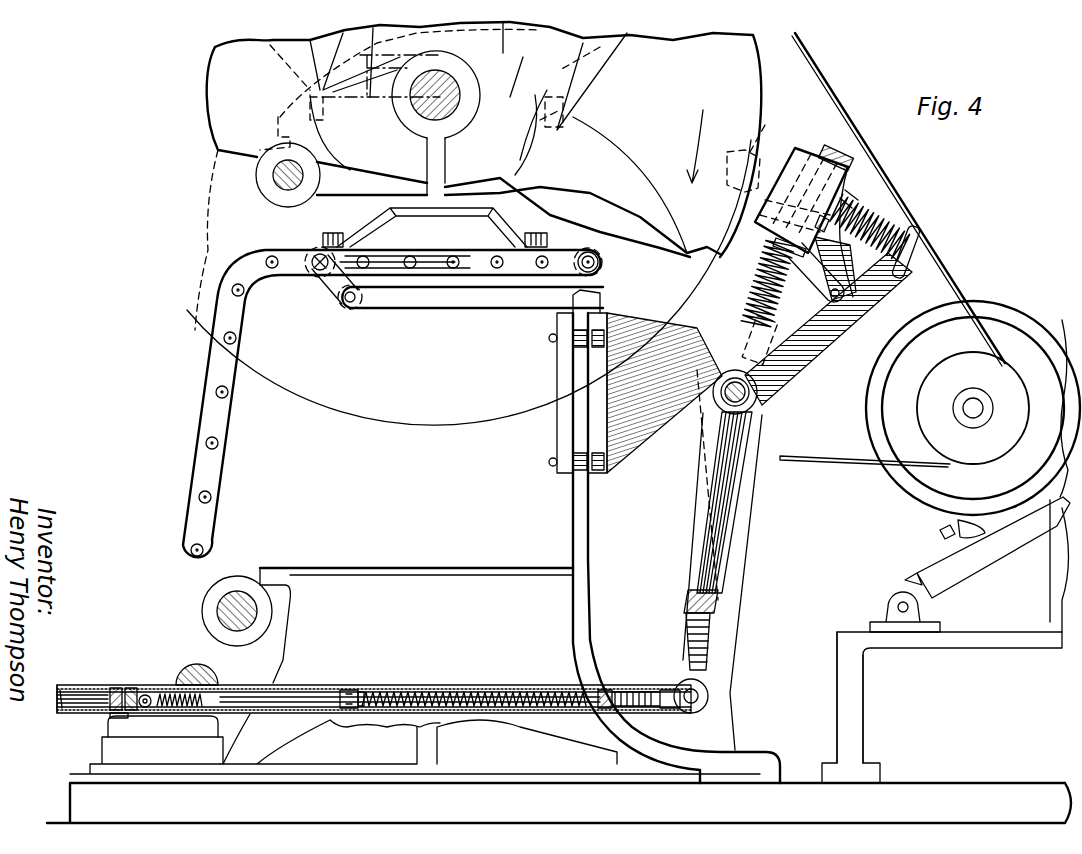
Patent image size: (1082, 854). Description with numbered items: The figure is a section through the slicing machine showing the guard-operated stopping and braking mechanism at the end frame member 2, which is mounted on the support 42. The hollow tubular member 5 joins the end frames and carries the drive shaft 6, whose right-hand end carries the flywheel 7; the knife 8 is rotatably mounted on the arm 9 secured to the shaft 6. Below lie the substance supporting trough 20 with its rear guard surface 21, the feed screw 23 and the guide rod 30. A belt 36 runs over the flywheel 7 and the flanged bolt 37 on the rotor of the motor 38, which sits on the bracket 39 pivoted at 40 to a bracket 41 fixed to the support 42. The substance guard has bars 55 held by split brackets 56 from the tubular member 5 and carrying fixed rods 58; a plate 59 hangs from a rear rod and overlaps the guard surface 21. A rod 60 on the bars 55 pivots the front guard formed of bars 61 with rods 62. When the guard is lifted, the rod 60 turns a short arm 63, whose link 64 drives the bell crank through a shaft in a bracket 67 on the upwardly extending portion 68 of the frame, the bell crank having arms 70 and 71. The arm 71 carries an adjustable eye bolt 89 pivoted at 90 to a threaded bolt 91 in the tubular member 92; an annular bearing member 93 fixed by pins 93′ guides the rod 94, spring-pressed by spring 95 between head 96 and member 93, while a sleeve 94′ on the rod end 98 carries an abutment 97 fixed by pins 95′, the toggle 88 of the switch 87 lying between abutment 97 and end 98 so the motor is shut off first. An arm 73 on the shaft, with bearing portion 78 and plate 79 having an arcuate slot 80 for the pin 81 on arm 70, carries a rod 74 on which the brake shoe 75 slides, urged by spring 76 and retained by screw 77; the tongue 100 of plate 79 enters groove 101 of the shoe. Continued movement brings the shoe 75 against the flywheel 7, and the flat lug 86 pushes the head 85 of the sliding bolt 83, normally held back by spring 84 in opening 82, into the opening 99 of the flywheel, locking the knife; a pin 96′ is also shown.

The end frame member 2 is at (733, 732).
The hollow tubular member 5 is at (932, 35).
The drive shaft 6 is at (432, 75).
The flywheel 7 is at (750, 70).
The knife 8 is at (600, 47).
The arm 9 is at (540, 120).
The substance supporting trough 20 is at (459, 568).
The guard surface 21 is at (573, 527).
The feed screw 23 is at (197, 665).
The guide rod 30 is at (225, 602).
The belt 36 is at (962, 300).
The flanged bolt 37 is at (998, 372).
The motor 38 is at (1013, 313).
The bracket 39 is at (933, 578).
The pivot 40 is at (895, 606).
The bracket 41 is at (848, 658).
The support 42 is at (796, 790).
The bars 55 is at (470, 258).
The brackets 56 is at (478, 210).
The rods 58 is at (395, 244).
The plate 59 is at (600, 268).
The rod 60 is at (318, 249).
The bars 61 is at (218, 369).
The rods 62 is at (210, 442).
The short arm 63 is at (337, 303).
The link 64 is at (473, 295).
The bracket 67 is at (607, 472).
The upwardly extending portion 68 is at (582, 426).
The arm 70 is at (832, 332).
The arm 71 is at (733, 500).
The arm 73 is at (757, 374).
The rod 74 is at (770, 266).
The brake shoe 75 is at (850, 173).
The spring 76 is at (775, 252).
The screw 77 is at (852, 165).
The bearing portion 78 is at (753, 404).
The plate 79 is at (812, 335).
The arcuate slot 80 is at (868, 290).
The pin 81 is at (862, 305).
The opening 82 is at (772, 158).
The sliding bolt 83 is at (830, 158).
The spring 84 is at (880, 223).
The head 85 is at (908, 240).
The flat lug 86 is at (918, 258).
The switch 87 is at (118, 729).
The toggle 88 is at (144, 694).
The adjustable eye bolt 89 is at (712, 676).
The pivot 90 is at (708, 694).
The threaded bolt 91 is at (670, 692).
The tubular member 92 is at (480, 692).
The annular bearing member 93 is at (350, 692).
The pins 93′ is at (355, 693).
The rod 94 is at (300, 690).
The sleeve 94′ is at (130, 688).
The spring 95 is at (408, 690).
The pins 95′ is at (58, 708).
The head 96 is at (603, 692).
The pin 96′ is at (65, 714).
The abutment 97 is at (116, 688).
The end 98 is at (178, 692).
The opening 99 is at (765, 125).
The tongue 100 is at (790, 205).
The groove 101 is at (790, 226).